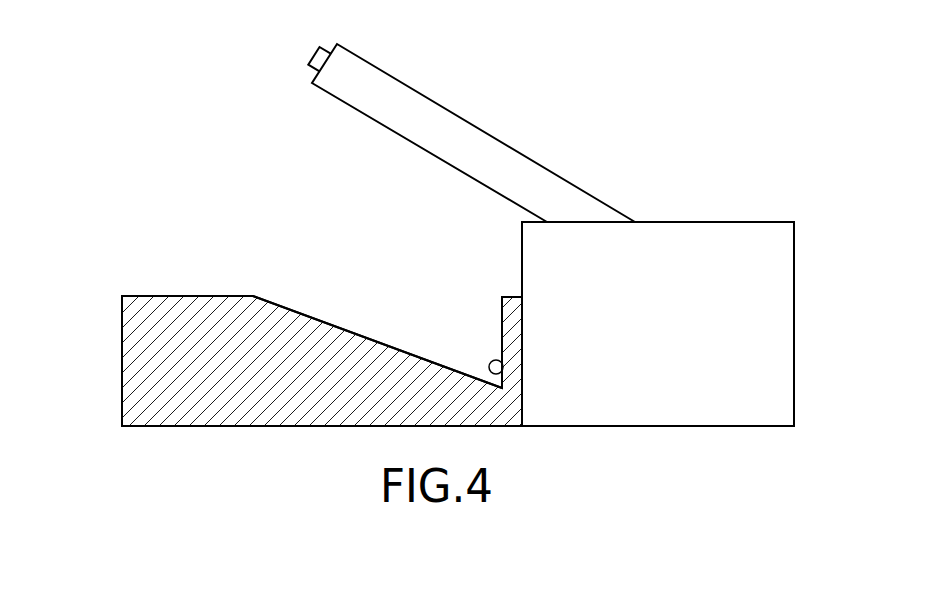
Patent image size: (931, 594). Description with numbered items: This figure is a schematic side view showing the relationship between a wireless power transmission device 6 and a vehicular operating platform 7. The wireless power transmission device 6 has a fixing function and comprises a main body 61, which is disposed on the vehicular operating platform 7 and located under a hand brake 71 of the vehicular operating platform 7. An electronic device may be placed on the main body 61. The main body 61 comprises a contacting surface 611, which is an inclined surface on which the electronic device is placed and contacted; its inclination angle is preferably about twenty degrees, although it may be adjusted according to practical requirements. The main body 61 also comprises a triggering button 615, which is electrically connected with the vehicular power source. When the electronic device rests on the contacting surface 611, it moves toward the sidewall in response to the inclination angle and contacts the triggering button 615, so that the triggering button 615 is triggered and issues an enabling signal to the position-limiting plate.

The wireless power transmission device 6 is at (258, 260).
The main body 61 is at (143, 368).
The contacting surface 611 is at (328, 320).
The triggering button 615 is at (500, 358).
The vehicular operating platform 7 is at (689, 55).
The hand brake 71 is at (472, 142).